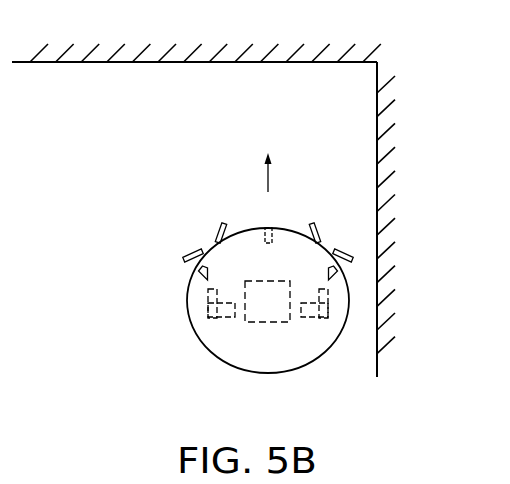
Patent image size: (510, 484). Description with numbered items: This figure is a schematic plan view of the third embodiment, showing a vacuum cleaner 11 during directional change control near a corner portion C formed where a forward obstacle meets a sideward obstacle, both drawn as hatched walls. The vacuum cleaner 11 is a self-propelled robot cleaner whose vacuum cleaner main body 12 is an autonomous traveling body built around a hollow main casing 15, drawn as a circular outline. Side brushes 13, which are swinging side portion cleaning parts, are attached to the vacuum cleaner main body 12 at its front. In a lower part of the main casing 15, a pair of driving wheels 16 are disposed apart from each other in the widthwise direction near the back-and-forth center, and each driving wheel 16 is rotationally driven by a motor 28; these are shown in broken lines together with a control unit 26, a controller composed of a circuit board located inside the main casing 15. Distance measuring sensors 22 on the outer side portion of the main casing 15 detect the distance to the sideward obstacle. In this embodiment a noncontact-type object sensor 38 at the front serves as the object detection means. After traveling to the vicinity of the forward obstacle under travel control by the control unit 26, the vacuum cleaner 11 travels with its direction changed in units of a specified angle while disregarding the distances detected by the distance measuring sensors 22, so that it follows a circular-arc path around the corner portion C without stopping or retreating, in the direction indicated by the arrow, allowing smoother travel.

The vacuum cleaner 11 is at (180, 251).
The vacuum cleaner main body 12 is at (217, 364).
The side brush 13 is at (213, 218).
The main casing 15 is at (268, 374).
The driving wheel 16 is at (210, 294).
The distance measuring sensor 22 is at (200, 274).
The control unit 26 is at (251, 322).
The motor 28 is at (227, 317).
The object sensor 38 is at (272, 238).
The corner portion C is at (352, 87).